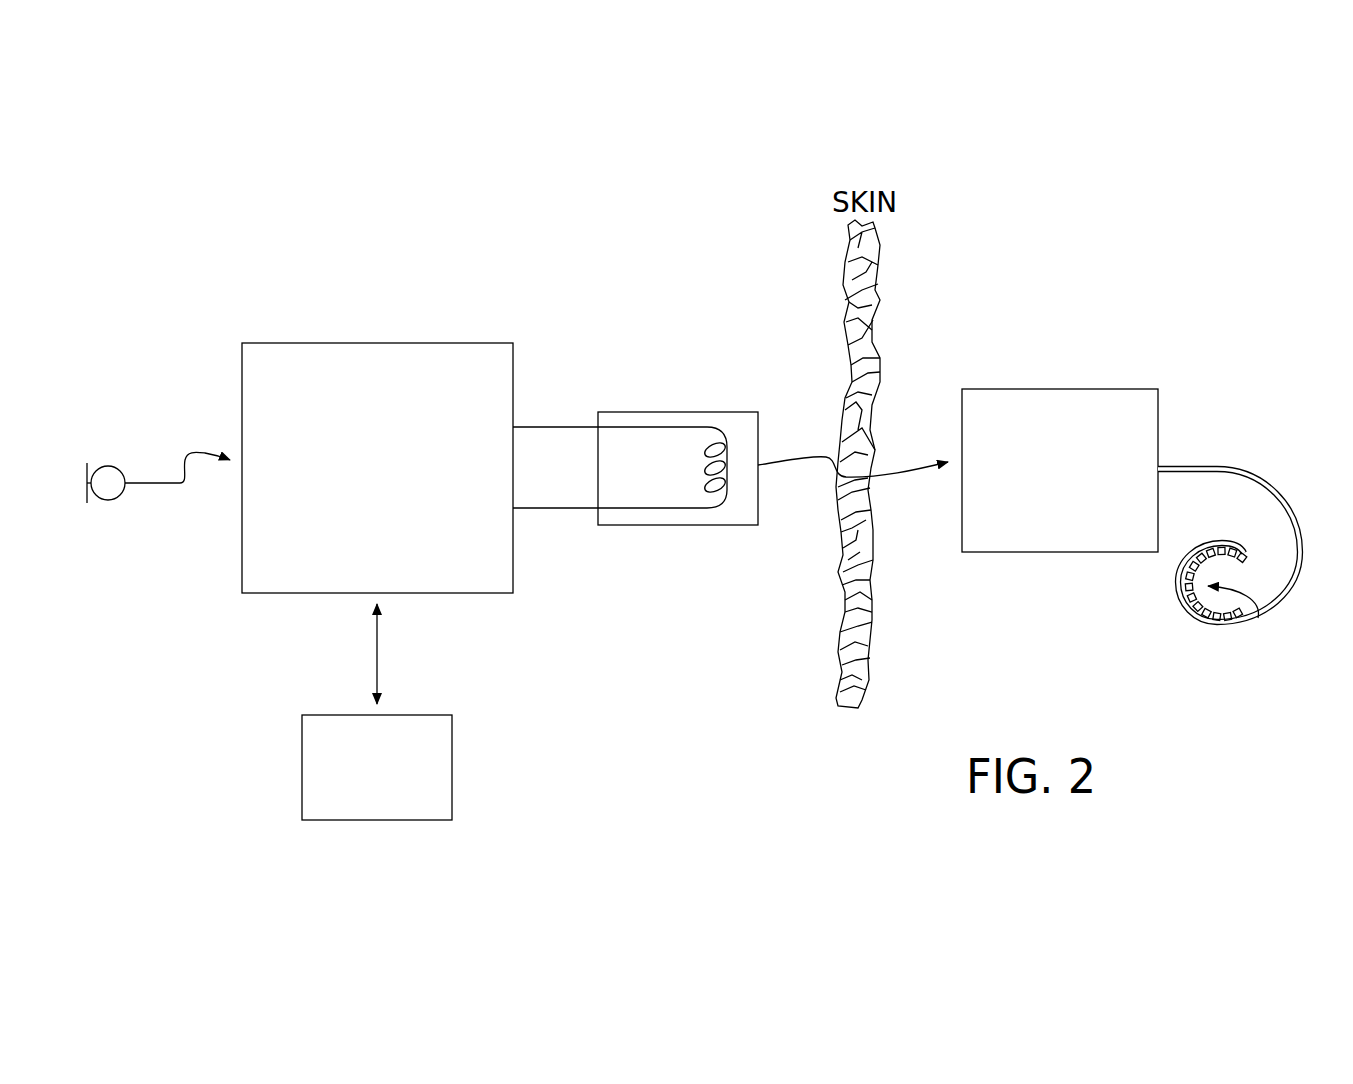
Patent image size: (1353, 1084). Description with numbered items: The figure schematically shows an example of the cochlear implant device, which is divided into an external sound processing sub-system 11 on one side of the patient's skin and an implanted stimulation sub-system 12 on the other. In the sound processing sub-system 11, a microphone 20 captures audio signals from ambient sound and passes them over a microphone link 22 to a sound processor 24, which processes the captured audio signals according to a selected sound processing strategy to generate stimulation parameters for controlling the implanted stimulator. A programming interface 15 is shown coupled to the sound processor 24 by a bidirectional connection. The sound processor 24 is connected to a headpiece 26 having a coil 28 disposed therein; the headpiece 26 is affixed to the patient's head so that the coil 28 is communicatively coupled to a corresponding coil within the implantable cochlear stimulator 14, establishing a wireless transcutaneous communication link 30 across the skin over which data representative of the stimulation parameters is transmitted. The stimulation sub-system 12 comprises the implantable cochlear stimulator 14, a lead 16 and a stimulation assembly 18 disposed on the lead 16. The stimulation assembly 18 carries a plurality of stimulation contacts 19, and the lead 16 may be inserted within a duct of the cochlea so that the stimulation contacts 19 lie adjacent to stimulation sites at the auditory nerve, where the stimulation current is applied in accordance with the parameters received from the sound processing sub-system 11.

The sound processing sub-system 11 is at (220, 276).
The stimulation sub-system 12 is at (1147, 310).
The implantable cochlear stimulator 14 is at (1073, 506).
The programming interface 15 is at (392, 781).
The lead 16 is at (1296, 588).
The stimulation assembly 18 is at (1213, 623).
The stimulation contacts 19 is at (1258, 618).
The microphone 20 is at (110, 501).
The microphone link 22 is at (155, 485).
The sound processor 24 is at (391, 527).
The headpiece 26 is at (727, 412).
The coil 28 is at (728, 497).
The wireless transcutaneous communication link 30 is at (913, 450).